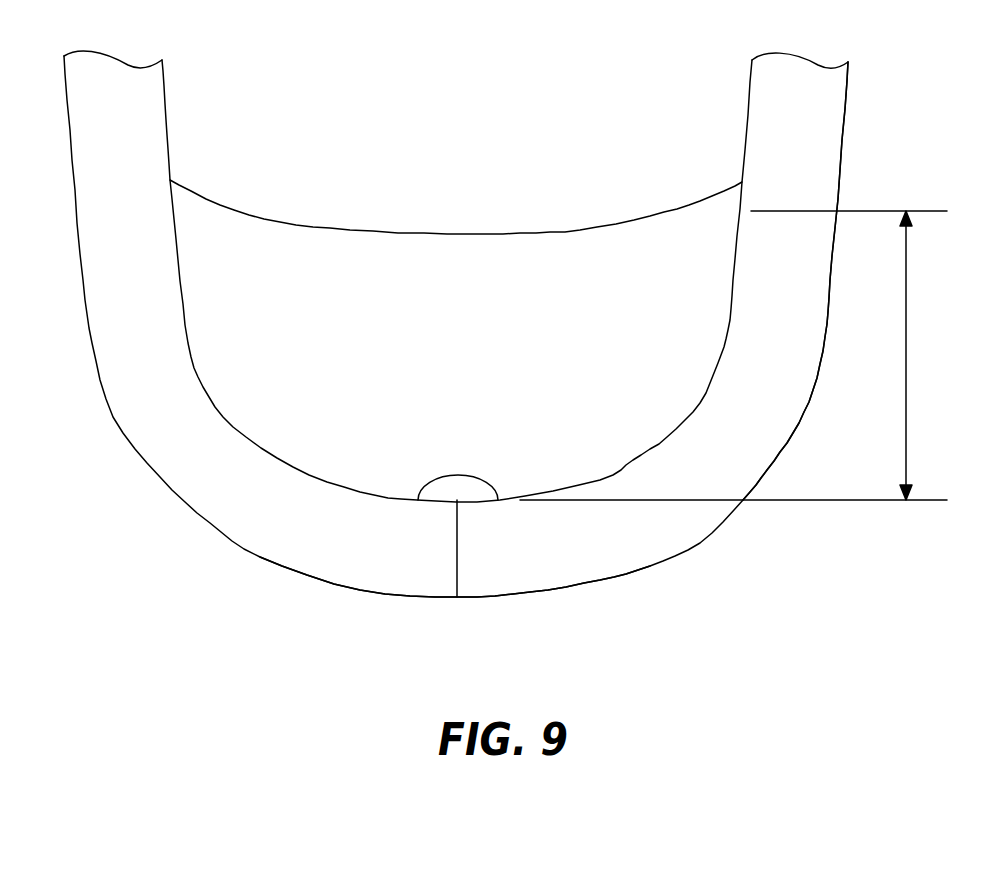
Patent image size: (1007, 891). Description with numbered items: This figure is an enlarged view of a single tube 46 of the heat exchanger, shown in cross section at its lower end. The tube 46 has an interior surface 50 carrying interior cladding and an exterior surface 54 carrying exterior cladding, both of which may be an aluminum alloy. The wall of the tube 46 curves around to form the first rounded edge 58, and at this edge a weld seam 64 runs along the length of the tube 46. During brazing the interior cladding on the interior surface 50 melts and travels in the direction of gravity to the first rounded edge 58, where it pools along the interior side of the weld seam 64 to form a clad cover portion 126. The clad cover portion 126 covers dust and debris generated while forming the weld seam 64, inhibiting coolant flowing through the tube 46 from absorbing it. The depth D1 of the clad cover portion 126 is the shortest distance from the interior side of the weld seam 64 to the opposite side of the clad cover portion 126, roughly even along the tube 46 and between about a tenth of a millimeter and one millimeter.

The tube 46 is at (108, 280).
The interior surface 50 is at (749, 113).
The exterior surface 54 is at (847, 113).
The first rounded edge 58 is at (284, 548).
The weld seam 64 is at (477, 492).
The clad cover portion 126 is at (357, 262).
The depth D1 is at (733, 355).